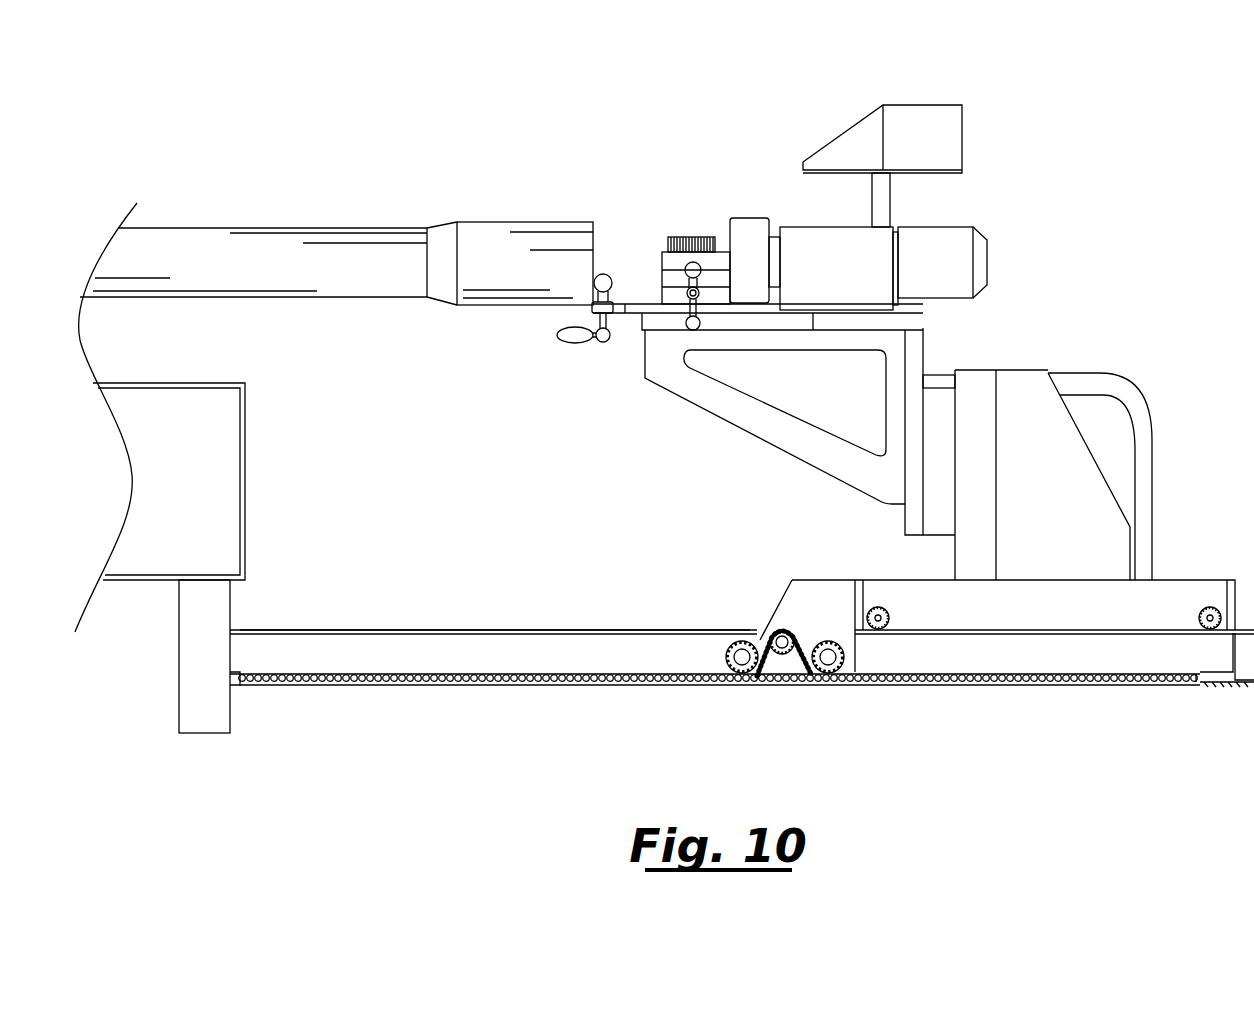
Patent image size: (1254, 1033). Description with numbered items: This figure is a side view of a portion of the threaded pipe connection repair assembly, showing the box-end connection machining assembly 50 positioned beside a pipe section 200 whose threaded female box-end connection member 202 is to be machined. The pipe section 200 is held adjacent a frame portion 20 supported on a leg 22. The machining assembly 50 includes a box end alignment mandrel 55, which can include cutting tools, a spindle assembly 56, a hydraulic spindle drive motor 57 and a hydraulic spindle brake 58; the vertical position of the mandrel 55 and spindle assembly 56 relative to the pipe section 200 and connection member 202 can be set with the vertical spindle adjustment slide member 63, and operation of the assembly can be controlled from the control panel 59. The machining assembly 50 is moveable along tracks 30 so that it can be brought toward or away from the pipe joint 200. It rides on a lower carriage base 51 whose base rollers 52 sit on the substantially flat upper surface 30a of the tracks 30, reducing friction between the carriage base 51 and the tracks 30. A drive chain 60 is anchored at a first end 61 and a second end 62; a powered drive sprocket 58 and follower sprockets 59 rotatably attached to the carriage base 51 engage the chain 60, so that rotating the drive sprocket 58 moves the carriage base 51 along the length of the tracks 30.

The machine frame 20 is at (167, 485).
The support leg 22 is at (195, 680).
The tracks 30 is at (363, 650).
The substantially flat upper surface 30a is at (468, 632).
The box-end connection machining assembly 50 is at (1038, 241).
The lower carriage base 51 is at (1160, 592).
The base rollers 52 is at (885, 630).
The box end alignment mandrel 55 is at (700, 245).
The spindle assembly 56 is at (808, 245).
The hydraulic spindle drive motor 57 is at (947, 245).
The powered drive sprocket 58 is at (782, 655).
The follower sprockets 59 is at (742, 645).
The drive chain 60 is at (440, 685).
The first end 61 is at (1195, 682).
The second end 62 is at (232, 687).
The vertical spindle adjustment slide member 63 is at (975, 395).
The pipe section 200 is at (263, 255).
The threaded female box-end connection member 202 is at (525, 240).